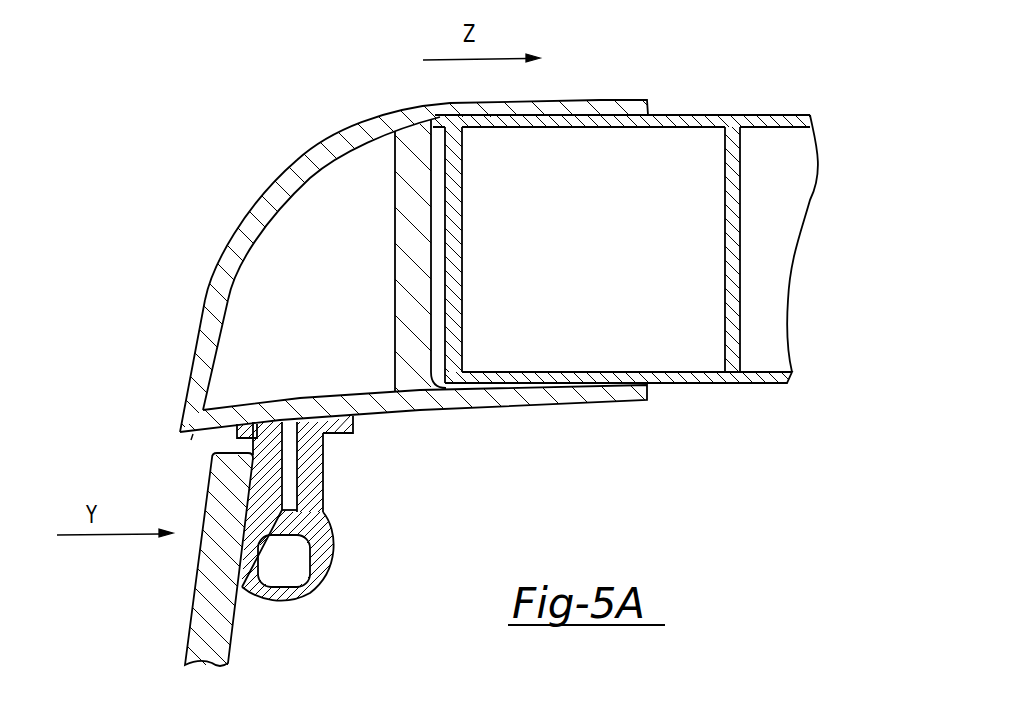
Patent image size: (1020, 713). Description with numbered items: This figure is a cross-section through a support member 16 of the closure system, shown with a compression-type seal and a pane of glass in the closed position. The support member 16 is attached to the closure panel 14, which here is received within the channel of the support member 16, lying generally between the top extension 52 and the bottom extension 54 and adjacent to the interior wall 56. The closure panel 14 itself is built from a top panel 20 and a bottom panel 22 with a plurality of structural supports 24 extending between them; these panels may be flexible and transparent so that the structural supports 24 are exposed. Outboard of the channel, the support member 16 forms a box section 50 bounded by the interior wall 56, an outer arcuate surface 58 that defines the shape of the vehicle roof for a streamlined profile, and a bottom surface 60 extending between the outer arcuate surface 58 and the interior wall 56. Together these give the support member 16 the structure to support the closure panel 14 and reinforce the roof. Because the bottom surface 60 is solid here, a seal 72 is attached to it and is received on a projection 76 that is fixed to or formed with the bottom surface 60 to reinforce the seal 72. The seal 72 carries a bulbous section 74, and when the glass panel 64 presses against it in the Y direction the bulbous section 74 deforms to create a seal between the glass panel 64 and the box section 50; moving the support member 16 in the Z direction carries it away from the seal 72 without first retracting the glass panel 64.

The closure panel 14 is at (680, 117).
The support member 16 is at (222, 256).
The top panel 20 is at (795, 116).
The bottom panel 22 is at (762, 383).
The structural supports 24 is at (740, 300).
The box section 50 is at (360, 172).
The top extension 52 is at (628, 102).
The bottom extension 54 is at (634, 400).
The interior wall 56 is at (407, 211).
The outer arcuate surface 58 is at (202, 327).
The bottom surface 60 is at (191, 440).
The glass panel 64 is at (208, 594).
The seal 72 is at (307, 498).
The bulbous section 74 is at (323, 563).
The projection 76 is at (292, 452).